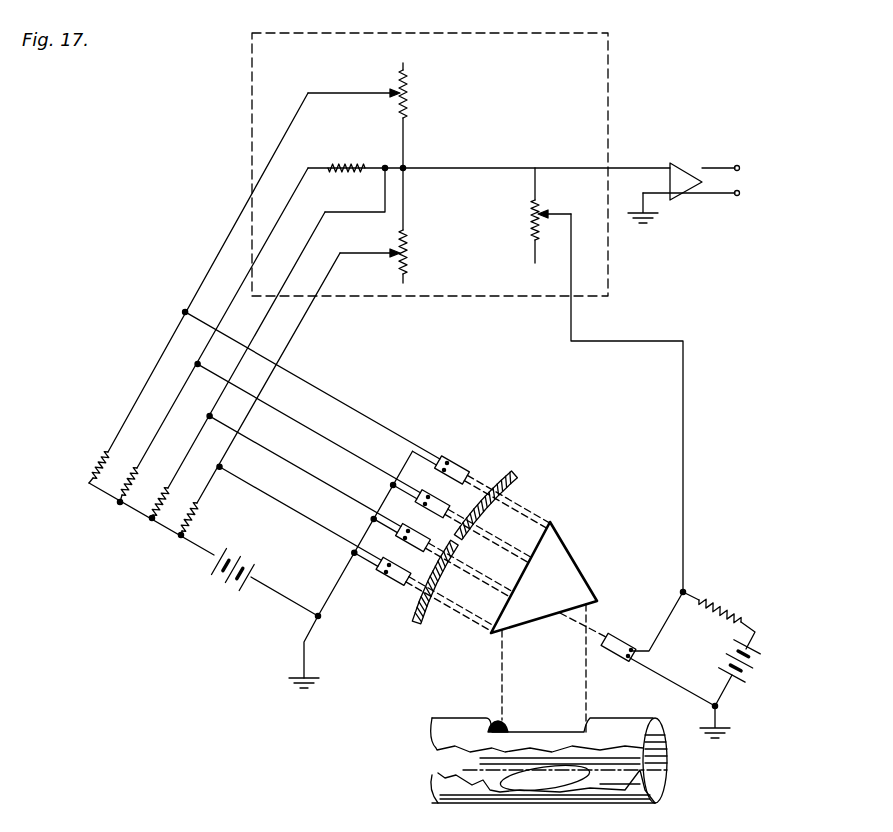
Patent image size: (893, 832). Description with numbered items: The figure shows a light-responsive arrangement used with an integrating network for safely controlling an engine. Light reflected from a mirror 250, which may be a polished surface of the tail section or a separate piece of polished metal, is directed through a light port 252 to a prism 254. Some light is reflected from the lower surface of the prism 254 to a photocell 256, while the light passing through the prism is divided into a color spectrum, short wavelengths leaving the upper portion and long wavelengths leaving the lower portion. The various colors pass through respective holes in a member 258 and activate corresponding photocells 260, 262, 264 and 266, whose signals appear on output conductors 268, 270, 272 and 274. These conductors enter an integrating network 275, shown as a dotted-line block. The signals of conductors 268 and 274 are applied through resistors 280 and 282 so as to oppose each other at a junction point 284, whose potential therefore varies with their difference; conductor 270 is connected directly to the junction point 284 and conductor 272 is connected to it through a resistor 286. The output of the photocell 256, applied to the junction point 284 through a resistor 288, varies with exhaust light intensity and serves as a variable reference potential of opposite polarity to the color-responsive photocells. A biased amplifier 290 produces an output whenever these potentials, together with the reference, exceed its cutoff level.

The mirror 250 is at (540, 790).
The light port 252 is at (497, 719).
The prism 254 is at (586, 568).
The photocell 256 is at (633, 645).
The member 258 is at (518, 476).
The photocell 260 is at (396, 586).
The photocell 262 is at (390, 546).
The photocell 264 is at (410, 510).
The photocell 266 is at (458, 455).
The output conductor 268 is at (292, 341).
The output conductor 270 is at (276, 302).
The output conductor 272 is at (236, 300).
The output conductor 274 is at (232, 230).
The integrating network 275 is at (252, 92).
The resistor 280 is at (407, 78).
The resistor 282 is at (407, 253).
The junction point 284 is at (405, 168).
The resistor 286 is at (350, 166).
The resistor 288 is at (535, 226).
The biased amplifier 290 is at (675, 164).